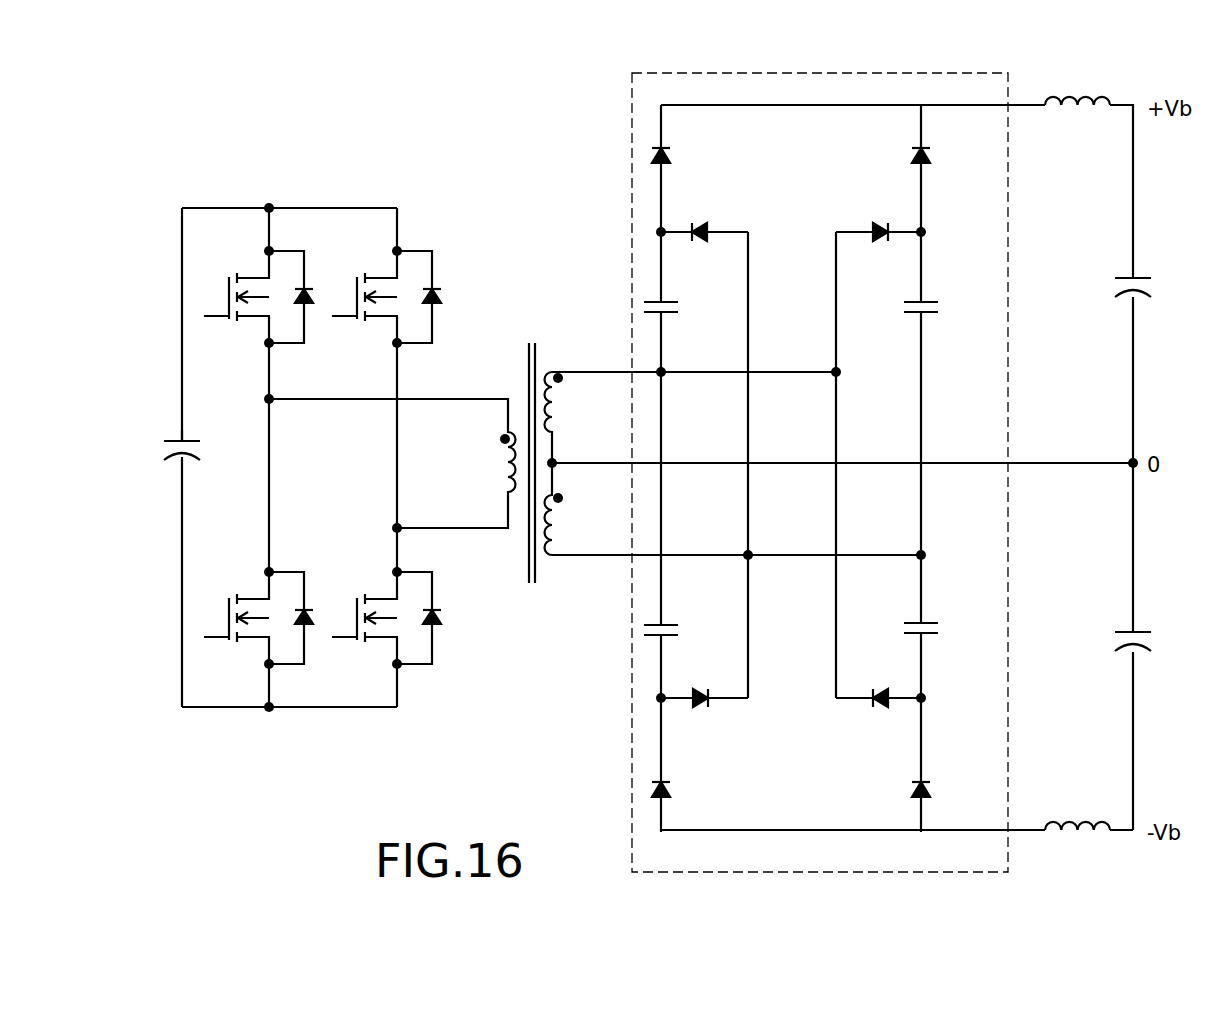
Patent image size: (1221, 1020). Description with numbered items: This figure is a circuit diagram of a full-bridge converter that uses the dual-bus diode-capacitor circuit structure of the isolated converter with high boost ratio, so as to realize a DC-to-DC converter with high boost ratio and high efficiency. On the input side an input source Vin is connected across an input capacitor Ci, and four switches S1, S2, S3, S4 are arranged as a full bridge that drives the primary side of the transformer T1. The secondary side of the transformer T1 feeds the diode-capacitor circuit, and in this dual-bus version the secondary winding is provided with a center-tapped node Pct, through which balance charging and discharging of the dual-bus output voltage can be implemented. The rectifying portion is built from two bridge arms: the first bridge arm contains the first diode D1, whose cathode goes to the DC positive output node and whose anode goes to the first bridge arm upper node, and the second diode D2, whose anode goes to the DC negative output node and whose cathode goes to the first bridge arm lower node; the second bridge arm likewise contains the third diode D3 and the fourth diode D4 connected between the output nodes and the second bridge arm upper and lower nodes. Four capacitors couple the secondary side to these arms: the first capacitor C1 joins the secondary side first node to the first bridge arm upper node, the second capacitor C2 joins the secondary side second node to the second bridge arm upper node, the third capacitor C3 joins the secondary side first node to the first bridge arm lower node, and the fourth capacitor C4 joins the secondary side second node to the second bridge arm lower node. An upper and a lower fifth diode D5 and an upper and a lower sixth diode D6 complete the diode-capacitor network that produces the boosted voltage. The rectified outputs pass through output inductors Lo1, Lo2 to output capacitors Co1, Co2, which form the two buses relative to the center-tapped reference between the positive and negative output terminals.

The input voltage source Vin is at (149, 433).
The input capacitor Ci is at (189, 436).
The first switch S1 is at (256, 297).
The second switch S2 is at (256, 618).
The third switch S3 is at (384, 297).
The fourth switch S4 is at (384, 618).
The transformer T1 is at (416, 465).
The center-tapped node Pct is at (557, 468).
The first diode D1 is at (937, 152).
The second diode D2 is at (939, 784).
The third diode D3 is at (677, 152).
The fourth diode D4 is at (677, 786).
The fifth diode D5 is at (881, 471).
The sixth diode D6 is at (708, 471).
The first capacitor C1 is at (932, 294).
The second capacitor C2 is at (674, 294).
The third capacitor C3 is at (932, 612).
The fourth capacitor C4 is at (675, 616).
The output inductor Lo1 is at (1077, 86).
The output inductor Lo2 is at (1077, 811).
The output capacitor Co1 is at (1147, 274).
The output capacitor Co2 is at (1147, 627).